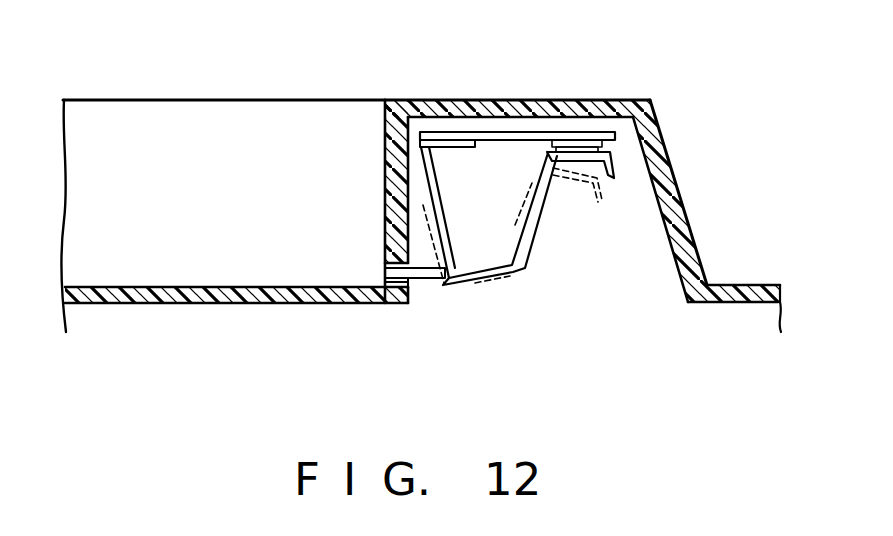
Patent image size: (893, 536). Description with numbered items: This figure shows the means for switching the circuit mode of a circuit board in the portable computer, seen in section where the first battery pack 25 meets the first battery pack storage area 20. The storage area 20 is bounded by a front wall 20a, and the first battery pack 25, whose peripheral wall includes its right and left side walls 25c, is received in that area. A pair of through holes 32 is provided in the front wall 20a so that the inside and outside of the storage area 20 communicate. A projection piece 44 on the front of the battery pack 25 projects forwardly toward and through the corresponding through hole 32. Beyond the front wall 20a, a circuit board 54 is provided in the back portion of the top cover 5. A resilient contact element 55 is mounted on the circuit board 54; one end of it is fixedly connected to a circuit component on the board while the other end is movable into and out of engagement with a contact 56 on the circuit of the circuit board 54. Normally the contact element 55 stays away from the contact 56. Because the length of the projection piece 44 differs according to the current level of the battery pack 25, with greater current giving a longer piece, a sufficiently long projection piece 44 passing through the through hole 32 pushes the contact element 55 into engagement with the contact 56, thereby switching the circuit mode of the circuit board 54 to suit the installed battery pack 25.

The top cover 5 is at (672, 178).
The first battery pack storage area 20 is at (160, 304).
The front wall 20a is at (385, 165).
The first battery pack 25 is at (251, 110).
The side wall 25c is at (155, 100).
The through hole 32 is at (385, 230).
The projection piece 44 is at (418, 278).
The circuit board 54 is at (488, 133).
The contact element 55 is at (500, 283).
The contact 56 is at (577, 141).